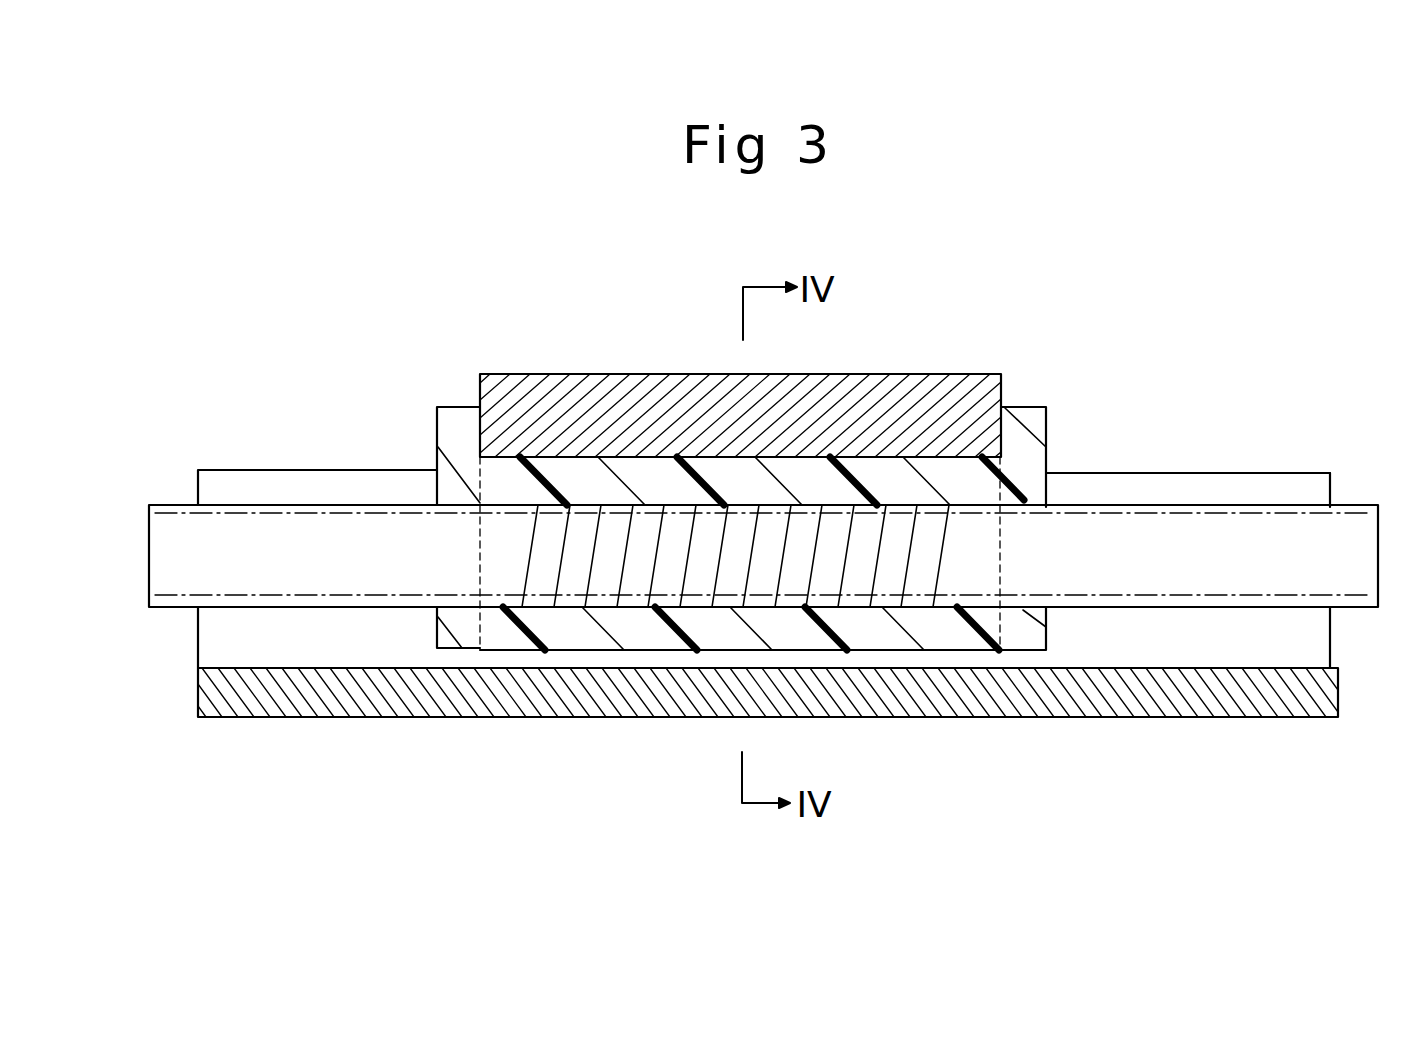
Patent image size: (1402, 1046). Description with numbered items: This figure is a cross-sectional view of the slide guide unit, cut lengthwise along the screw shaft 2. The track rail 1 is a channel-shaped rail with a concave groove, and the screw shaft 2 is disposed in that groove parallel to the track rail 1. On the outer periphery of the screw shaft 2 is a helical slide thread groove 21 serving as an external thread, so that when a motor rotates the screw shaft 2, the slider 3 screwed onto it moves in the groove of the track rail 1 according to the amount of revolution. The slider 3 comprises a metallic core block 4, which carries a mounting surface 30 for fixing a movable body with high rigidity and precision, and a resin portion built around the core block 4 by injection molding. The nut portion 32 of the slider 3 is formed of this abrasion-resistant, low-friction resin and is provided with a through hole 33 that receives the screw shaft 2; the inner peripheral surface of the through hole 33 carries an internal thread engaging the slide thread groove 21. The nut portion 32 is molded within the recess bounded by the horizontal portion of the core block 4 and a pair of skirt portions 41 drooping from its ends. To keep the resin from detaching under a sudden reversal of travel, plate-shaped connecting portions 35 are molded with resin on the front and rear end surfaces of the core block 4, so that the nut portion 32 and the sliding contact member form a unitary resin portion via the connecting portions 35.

The track rail 1 is at (1228, 460).
The screw shaft 2 is at (267, 493).
The slider 3 is at (534, 360).
The core block 4 is at (625, 400).
The slide thread groove 21 is at (1150, 506).
The mounting surface 30 is at (763, 436).
The nut portion 32 is at (578, 633).
The through hole 33 is at (888, 605).
The connecting portion 35 is at (458, 408).
The skirt portion 41 is at (1000, 625).